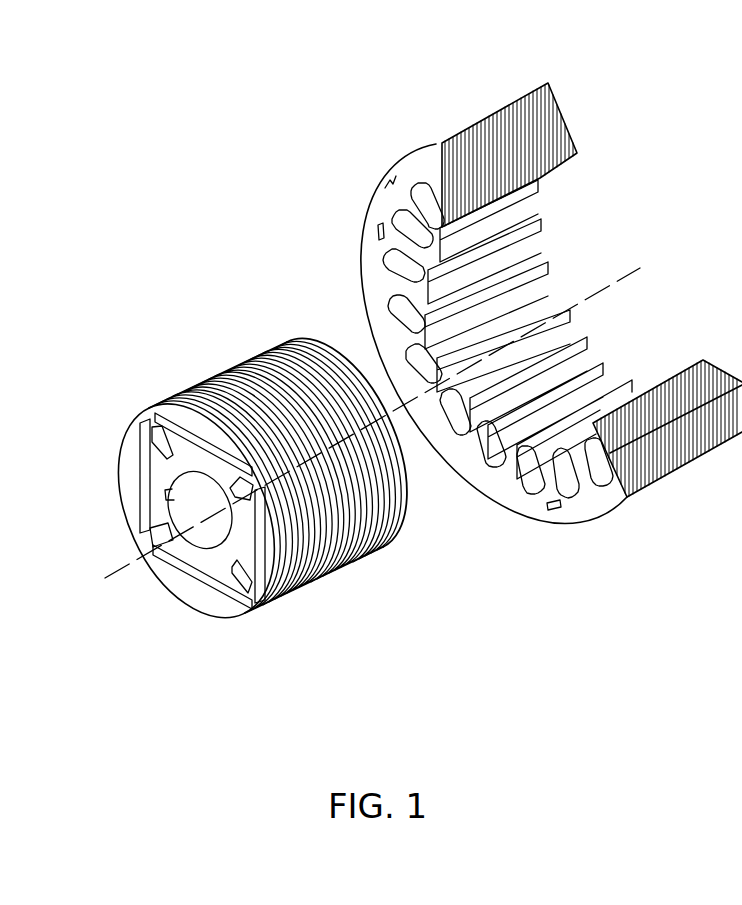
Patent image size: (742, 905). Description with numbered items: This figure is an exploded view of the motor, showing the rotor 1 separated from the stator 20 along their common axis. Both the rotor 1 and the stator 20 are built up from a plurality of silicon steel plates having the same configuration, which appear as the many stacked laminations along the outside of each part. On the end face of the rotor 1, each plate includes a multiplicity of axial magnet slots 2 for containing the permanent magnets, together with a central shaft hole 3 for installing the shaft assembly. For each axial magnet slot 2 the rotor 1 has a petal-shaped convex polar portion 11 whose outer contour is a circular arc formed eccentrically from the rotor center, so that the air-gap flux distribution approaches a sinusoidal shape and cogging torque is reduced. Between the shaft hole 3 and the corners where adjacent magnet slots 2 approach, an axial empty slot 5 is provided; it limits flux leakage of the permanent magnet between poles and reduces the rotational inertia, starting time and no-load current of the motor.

The rotor 1 is at (200, 686).
The axial magnet slots 2 is at (258, 575).
The shaft hole 3 is at (233, 530).
The axial empty slot 5 is at (162, 540).
The petal-shaped convex polar portion 11 is at (192, 395).
The stator 20 is at (665, 119).